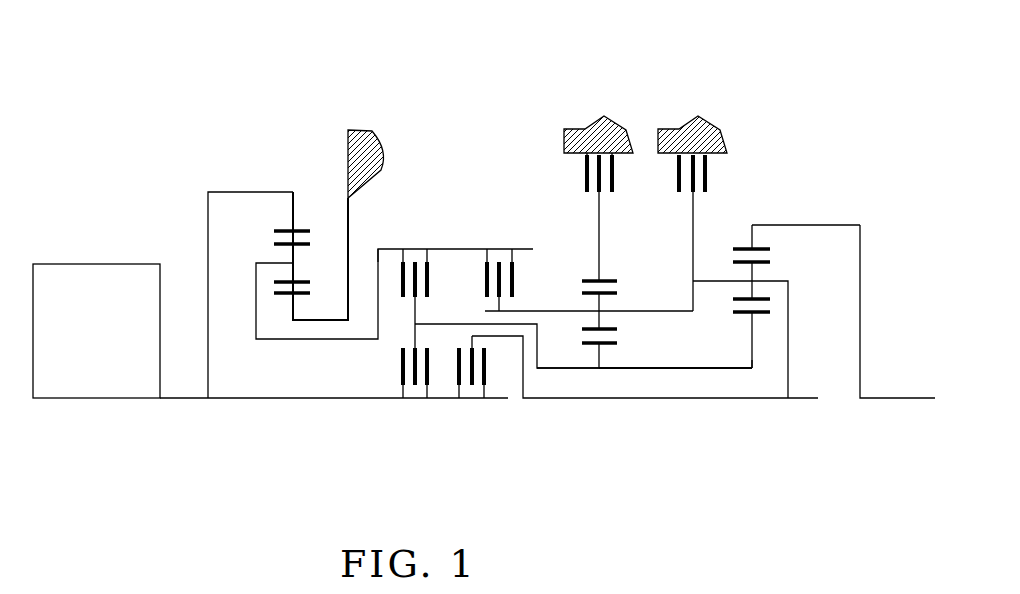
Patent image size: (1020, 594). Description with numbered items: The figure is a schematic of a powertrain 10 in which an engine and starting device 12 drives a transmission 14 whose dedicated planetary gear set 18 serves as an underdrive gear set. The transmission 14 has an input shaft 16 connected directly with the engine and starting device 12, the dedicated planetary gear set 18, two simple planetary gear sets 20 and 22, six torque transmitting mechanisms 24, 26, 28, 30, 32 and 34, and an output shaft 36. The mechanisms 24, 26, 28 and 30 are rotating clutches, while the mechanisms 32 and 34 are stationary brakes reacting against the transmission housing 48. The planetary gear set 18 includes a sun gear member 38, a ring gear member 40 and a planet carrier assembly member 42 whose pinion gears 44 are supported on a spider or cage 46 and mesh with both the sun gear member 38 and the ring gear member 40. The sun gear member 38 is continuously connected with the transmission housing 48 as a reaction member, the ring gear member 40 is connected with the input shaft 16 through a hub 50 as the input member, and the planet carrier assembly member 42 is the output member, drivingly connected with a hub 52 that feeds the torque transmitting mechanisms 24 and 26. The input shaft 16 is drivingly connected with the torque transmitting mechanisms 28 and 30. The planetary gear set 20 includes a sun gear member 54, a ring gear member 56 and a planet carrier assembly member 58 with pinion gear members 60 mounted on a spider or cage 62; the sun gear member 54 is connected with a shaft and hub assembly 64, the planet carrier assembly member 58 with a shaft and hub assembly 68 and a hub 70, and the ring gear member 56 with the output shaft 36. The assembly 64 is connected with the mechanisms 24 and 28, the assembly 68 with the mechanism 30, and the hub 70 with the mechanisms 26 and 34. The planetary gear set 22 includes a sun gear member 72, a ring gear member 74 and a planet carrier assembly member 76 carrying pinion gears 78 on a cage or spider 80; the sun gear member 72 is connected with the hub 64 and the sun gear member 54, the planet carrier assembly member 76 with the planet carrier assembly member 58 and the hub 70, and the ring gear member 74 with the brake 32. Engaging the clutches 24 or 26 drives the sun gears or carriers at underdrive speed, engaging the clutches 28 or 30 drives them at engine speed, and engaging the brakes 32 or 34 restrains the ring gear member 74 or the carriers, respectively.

The powertrain 10 is at (374, 95).
The engine and starting device 12 is at (100, 262).
The transmission 14 is at (492, 128).
The input shaft 16 is at (180, 400).
The dedicated planetary gear set 18 is at (311, 200).
The simple planetary gear set 20 is at (752, 372).
The simple planetary gear set 22 is at (599, 372).
The torque transmitting mechanism 24 is at (417, 250).
The torque transmitting mechanism 26 is at (500, 250).
The torque transmitting mechanism 28 is at (412, 402).
The torque transmitting mechanism 30 is at (484, 402).
The torque transmitting mechanism 32 is at (622, 176).
The torque transmitting mechanism 34 is at (715, 176).
The output shaft 36 is at (893, 400).
The sun gear member 38 is at (292, 307).
The ring gear member 40 is at (293, 211).
The planet carrier assembly member 42 is at (313, 252).
The pinion gears 44 is at (277, 253).
The spider or cage 46 is at (256, 300).
The transmission housing 48 is at (384, 157).
The hub 50 is at (207, 237).
The hub 52 is at (378, 262).
The sun gear member 54 is at (752, 338).
The ring gear member 56 is at (752, 238).
The planet carrier assembly member 58 is at (778, 262).
The pinion gear members 60 is at (752, 288).
The spider or cage 62 is at (773, 278).
The shaft and hub assembly 64 is at (562, 370).
The shaft and hub assembly 68 is at (638, 370).
The hub 70 is at (543, 310).
The sun gear member 72 is at (603, 354).
The ring gear member 74 is at (601, 268).
The planet carrier assembly member 76 is at (614, 302).
The pinion gears 78 is at (595, 319).
The cage or spider 80 is at (620, 313).